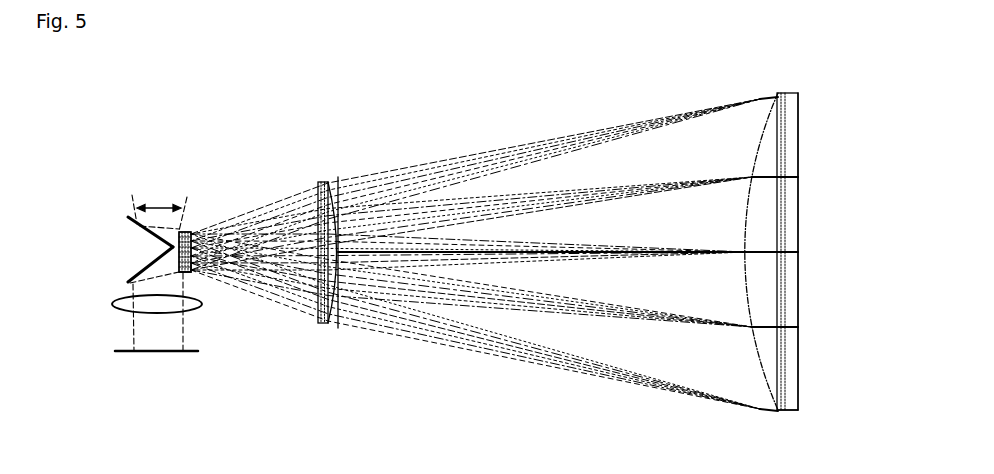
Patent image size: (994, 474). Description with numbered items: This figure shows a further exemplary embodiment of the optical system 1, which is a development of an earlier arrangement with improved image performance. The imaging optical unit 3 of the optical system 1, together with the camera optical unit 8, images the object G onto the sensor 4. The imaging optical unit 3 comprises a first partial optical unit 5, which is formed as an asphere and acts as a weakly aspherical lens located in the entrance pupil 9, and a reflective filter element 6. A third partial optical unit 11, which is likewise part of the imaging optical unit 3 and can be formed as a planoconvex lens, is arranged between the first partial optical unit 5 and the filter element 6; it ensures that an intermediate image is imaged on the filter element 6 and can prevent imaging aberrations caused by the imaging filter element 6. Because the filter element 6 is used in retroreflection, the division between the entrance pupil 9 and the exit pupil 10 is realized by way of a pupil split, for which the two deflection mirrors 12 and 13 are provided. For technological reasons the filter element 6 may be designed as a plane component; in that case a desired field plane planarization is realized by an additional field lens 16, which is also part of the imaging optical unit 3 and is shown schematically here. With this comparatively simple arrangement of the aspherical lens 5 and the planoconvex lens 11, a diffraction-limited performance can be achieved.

The optical system 1 is at (780, 411).
The imaging optical unit 3 is at (799, 152).
The sensor 4 is at (158, 352).
The first partial optical unit 5 is at (192, 258).
The reflective filter element 6 is at (800, 216).
The camera optical unit 8 is at (186, 309).
The entrance pupil 9 is at (190, 252).
The exit pupil 10 is at (192, 273).
The third partial optical unit 11 is at (318, 183).
The deflection mirror 12 is at (138, 226).
The deflection mirror 13 is at (135, 280).
The field lens 16 is at (763, 130).
The object G is at (160, 207).